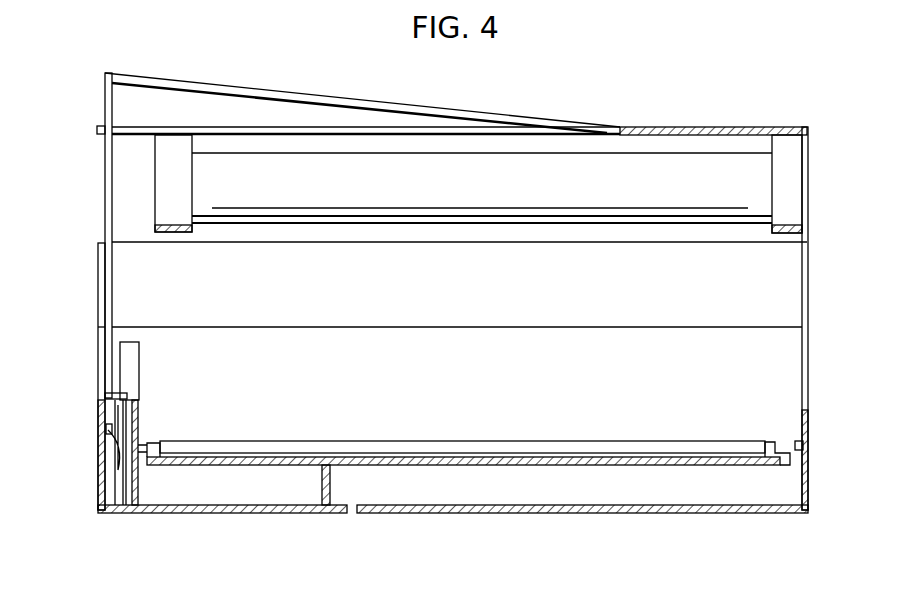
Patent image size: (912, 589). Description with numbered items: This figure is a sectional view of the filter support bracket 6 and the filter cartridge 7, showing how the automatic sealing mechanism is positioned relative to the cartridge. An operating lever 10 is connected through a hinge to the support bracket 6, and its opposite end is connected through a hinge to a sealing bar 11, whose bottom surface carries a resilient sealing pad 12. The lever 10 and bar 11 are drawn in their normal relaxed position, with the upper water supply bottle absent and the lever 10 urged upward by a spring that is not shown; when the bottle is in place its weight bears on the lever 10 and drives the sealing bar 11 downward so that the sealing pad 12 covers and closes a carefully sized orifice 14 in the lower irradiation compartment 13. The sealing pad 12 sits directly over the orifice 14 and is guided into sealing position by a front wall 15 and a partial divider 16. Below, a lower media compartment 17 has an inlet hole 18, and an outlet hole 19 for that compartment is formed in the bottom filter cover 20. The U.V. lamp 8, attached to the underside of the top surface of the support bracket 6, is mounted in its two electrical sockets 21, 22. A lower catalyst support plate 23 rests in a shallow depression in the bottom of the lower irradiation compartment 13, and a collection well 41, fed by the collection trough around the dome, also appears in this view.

The filter support bracket 6 is at (655, 127).
The filter cartridge 7 is at (812, 288).
The U.V. lamp 8 is at (717, 152).
The operating lever 10 is at (262, 88).
The sealing bar 11 is at (105, 178).
The sealing pad 12 is at (108, 398).
The lower irradiation compartment 13 is at (542, 428).
The orifice 14 is at (117, 450).
The front wall 15 is at (108, 432).
The partial divider 16 is at (140, 427).
The lower media compartment 17 is at (458, 483).
The inlet hole 18 is at (792, 441).
The outlet hole 19 is at (348, 513).
The bottom filter cover 20 is at (212, 513).
The electrical socket 21 is at (177, 185).
The electrical socket 22 is at (795, 187).
The lower catalyst support plate 23 is at (615, 447).
The collection well 41 is at (120, 505).